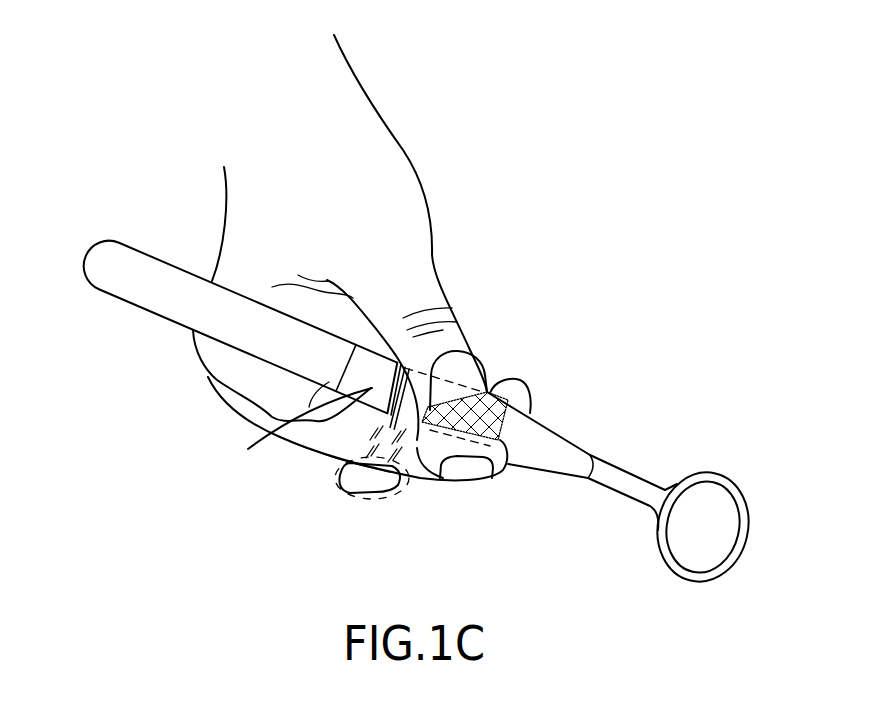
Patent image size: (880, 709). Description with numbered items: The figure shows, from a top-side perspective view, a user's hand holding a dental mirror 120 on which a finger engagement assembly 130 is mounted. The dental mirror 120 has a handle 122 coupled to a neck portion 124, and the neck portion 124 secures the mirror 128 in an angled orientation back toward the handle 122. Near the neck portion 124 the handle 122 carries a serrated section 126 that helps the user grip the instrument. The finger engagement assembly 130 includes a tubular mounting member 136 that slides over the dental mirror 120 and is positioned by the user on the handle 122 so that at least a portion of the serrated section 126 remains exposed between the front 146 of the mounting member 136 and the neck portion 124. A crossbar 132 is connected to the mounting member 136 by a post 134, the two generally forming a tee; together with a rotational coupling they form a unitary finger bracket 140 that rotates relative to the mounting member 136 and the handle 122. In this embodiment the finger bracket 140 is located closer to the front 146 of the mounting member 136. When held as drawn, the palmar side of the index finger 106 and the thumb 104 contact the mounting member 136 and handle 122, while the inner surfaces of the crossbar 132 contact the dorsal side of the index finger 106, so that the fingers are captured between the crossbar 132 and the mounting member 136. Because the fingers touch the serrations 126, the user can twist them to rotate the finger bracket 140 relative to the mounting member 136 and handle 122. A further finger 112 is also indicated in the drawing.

The thumb 104 is at (415, 287).
The index finger 106 is at (295, 400).
The finger 112 is at (329, 455).
The dental mirror 120 is at (113, 300).
The handle 122 is at (193, 304).
The neck portion 124 is at (637, 487).
The serrated section 126 is at (500, 407).
The mirror 128 is at (742, 501).
The finger engagement assembly 130 is at (348, 333).
The crossbar 132 is at (387, 482).
The post 134 is at (417, 440).
The mounting member 136 is at (292, 428).
The finger bracket 140 is at (350, 490).
The front of the mounting member 146 is at (430, 408).